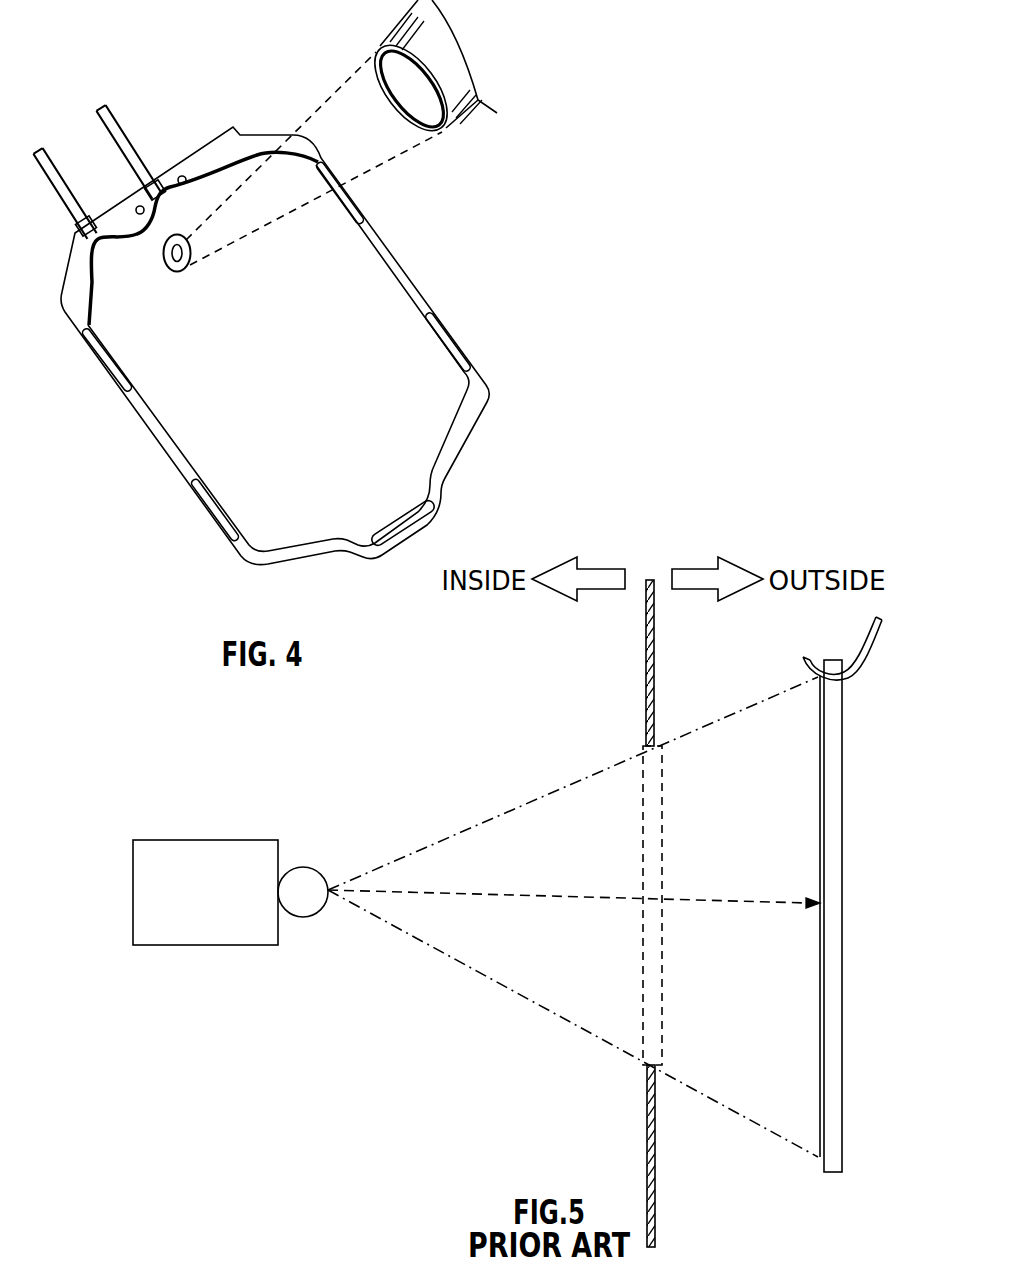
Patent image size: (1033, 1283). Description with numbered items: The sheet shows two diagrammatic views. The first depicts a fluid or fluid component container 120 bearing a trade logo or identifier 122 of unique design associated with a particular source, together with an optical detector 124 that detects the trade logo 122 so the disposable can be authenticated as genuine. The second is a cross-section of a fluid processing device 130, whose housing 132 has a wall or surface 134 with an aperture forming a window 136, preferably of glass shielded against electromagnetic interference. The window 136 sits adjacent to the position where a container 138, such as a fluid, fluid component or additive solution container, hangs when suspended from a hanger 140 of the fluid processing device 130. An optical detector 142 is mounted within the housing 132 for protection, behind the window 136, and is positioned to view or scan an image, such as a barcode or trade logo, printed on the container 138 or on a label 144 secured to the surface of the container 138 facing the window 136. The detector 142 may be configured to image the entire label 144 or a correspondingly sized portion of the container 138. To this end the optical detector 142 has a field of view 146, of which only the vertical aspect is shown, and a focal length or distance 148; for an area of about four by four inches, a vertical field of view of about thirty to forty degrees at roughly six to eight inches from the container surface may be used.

In FIG. 4, the fluid or fluid component container 120 is at (350, 302).
In FIG. 4, the trade logo or identifier 122 is at (173, 233).
In FIG. 4, the optical detector 124 is at (437, 73).
In FIG. 5, the fluid processing device 130 is at (679, 1172).
In FIG. 5, the housing 132 is at (641, 663).
In FIG. 5, the wall or surface 134 is at (657, 622).
In FIG. 5, the window 136 is at (642, 798).
In FIG. 5, the container 138 is at (835, 753).
In FIG. 5, the hanger 140 is at (875, 647).
In FIG. 5, the optical detector 142 is at (217, 923).
In FIG. 5, the label 144 is at (820, 1070).
In FIG. 5, the field of view 146 is at (392, 923).
In FIG. 5, the focal length or distance 148 is at (518, 897).